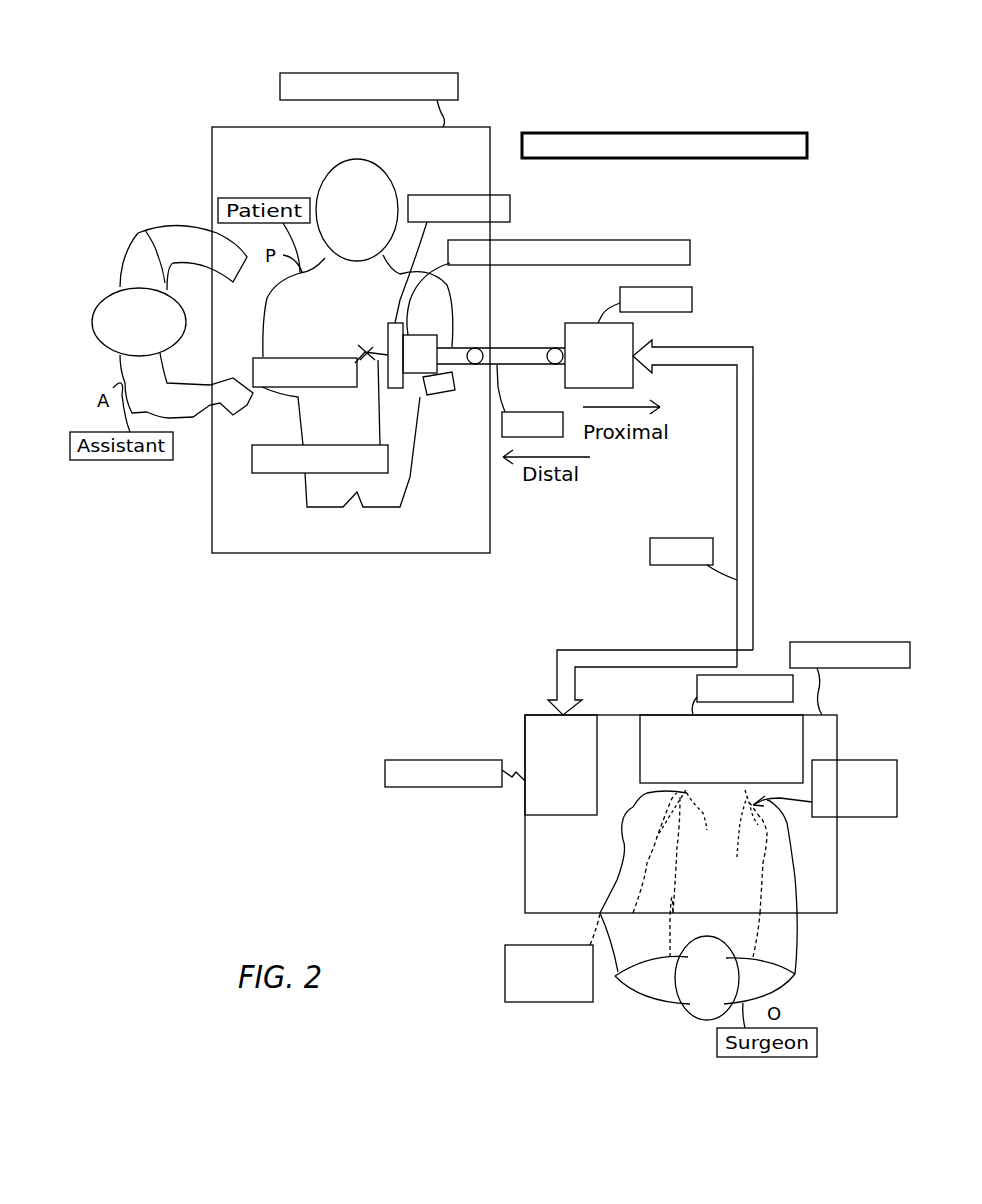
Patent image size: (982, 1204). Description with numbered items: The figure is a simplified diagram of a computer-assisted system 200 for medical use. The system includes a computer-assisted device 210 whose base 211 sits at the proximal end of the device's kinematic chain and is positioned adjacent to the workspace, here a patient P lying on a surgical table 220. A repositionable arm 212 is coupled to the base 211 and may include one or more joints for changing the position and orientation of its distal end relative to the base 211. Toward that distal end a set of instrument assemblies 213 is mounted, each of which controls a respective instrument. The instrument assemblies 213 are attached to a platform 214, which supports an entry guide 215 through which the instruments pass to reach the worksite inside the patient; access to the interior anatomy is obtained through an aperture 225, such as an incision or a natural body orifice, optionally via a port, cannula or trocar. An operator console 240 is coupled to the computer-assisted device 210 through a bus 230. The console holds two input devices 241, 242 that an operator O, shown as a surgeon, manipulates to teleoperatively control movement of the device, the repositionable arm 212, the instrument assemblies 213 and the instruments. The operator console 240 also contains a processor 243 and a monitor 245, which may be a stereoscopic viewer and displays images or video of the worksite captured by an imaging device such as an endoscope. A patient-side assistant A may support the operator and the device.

The computer-assisted system 200 is at (862, 44).
The computer-assisted device 210 is at (647, 215).
The base 211 is at (628, 337).
The repositionable arm 212 is at (500, 366).
The instrument assemblies 213 is at (420, 333).
The platform 214 is at (397, 312).
The entry guide 215 is at (374, 390).
The surgical table 220 is at (449, 115).
The aperture 225 is at (297, 357).
The bus 230 is at (735, 586).
The operator console 240 is at (707, 822).
The input device 241 is at (692, 823).
The input device 242 is at (732, 841).
The processor 243 is at (491, 765).
The monitor 245 is at (721, 729).